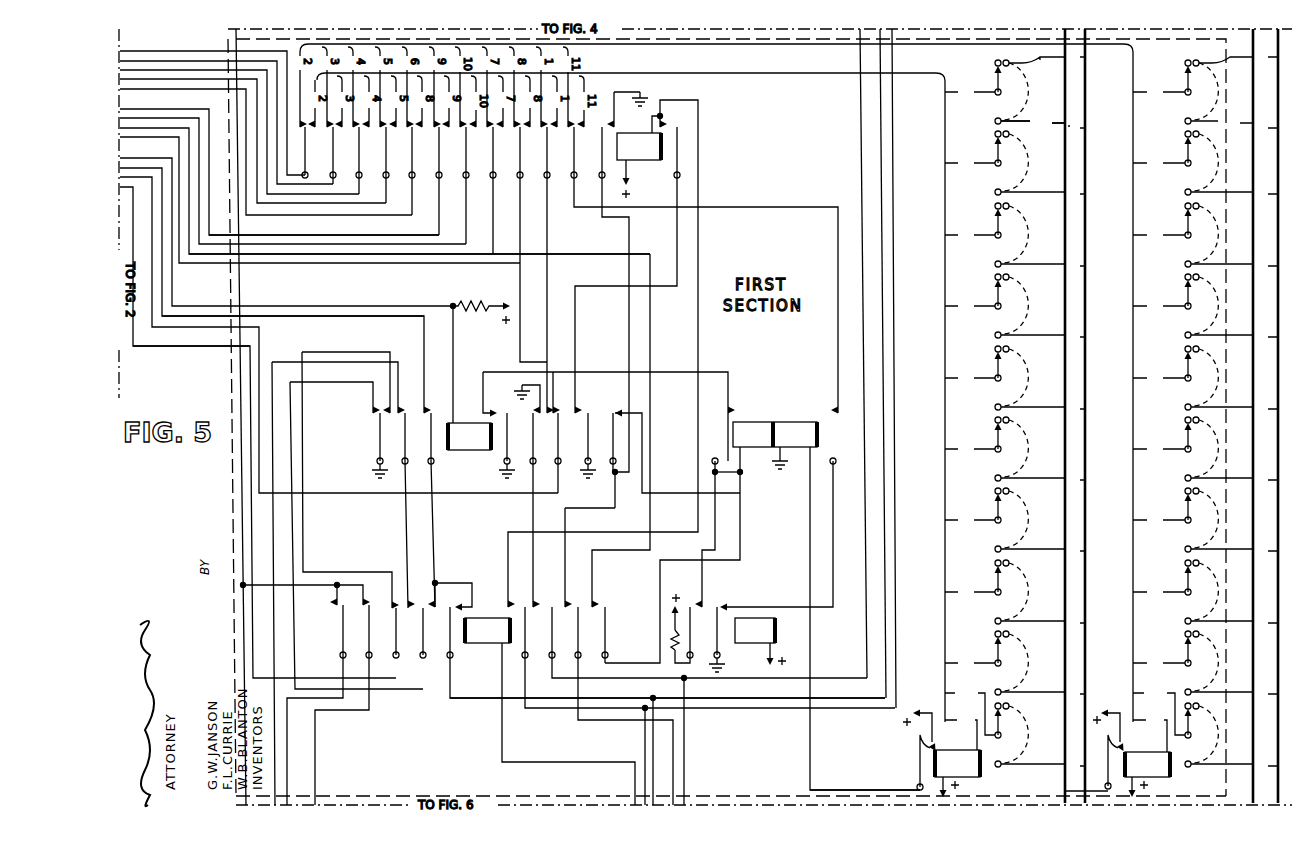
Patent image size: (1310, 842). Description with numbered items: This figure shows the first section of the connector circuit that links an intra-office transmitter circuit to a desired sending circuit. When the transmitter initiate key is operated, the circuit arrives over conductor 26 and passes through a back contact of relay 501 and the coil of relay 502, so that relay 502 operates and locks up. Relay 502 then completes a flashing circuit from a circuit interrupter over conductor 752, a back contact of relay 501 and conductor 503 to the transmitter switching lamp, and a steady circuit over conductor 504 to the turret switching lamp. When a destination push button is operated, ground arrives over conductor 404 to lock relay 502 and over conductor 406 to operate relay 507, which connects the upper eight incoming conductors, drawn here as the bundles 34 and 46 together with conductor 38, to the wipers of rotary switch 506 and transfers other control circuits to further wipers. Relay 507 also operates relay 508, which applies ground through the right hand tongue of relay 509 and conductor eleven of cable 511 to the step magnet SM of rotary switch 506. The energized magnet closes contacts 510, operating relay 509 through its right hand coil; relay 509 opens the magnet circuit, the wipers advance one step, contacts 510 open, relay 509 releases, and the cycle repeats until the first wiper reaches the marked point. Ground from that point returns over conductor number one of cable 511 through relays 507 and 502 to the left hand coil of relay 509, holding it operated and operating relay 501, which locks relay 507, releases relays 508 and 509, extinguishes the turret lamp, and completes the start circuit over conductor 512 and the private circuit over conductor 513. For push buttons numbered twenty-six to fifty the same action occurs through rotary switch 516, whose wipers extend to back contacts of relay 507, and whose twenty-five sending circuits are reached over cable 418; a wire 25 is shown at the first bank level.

The conductor group 34 is at (131, 109).
The conductor group 46 is at (131, 158).
The conductor 513 is at (285, 236).
The conductor 38 is at (338, 255).
The conductor 26 is at (355, 316).
The conductor 512 is at (202, 347).
The conductor 503 is at (245, 519).
The conductor 752 is at (277, 768).
The relay 501 is at (472, 448).
The relay 502 is at (490, 640).
The relay 507 is at (646, 150).
The relay 508 is at (758, 642).
The relay 509 is at (775, 423).
The conductor 504 is at (860, 58).
The conductor 406 is at (883, 60).
The conductor 404 is at (884, 148).
The cable 511 is at (800, 76).
The rotary switch 506 is at (993, 86).
The rotary switch 516 is at (1183, 86).
The contacts 510 is at (922, 750).
The conductor 25 is at (1033, 122).
The cable 418 is at (1185, 416).